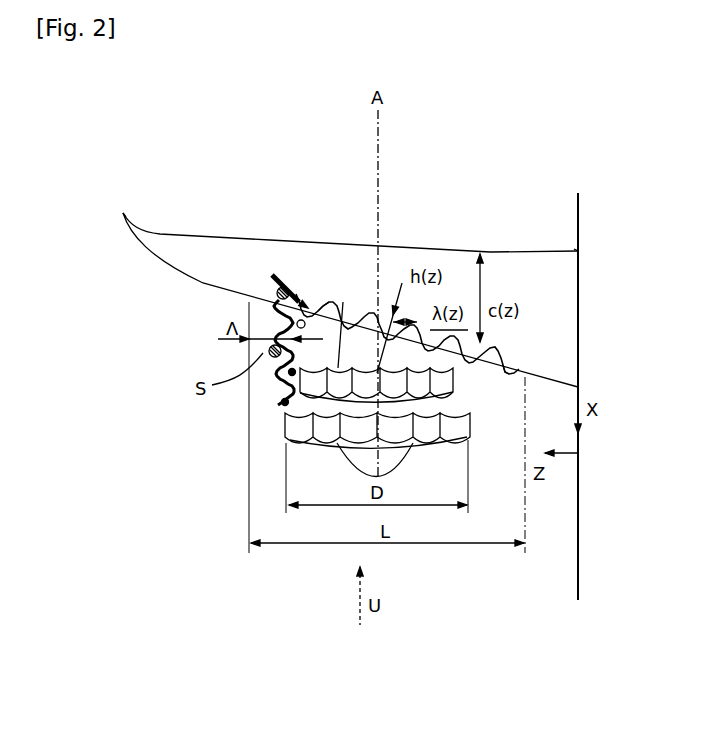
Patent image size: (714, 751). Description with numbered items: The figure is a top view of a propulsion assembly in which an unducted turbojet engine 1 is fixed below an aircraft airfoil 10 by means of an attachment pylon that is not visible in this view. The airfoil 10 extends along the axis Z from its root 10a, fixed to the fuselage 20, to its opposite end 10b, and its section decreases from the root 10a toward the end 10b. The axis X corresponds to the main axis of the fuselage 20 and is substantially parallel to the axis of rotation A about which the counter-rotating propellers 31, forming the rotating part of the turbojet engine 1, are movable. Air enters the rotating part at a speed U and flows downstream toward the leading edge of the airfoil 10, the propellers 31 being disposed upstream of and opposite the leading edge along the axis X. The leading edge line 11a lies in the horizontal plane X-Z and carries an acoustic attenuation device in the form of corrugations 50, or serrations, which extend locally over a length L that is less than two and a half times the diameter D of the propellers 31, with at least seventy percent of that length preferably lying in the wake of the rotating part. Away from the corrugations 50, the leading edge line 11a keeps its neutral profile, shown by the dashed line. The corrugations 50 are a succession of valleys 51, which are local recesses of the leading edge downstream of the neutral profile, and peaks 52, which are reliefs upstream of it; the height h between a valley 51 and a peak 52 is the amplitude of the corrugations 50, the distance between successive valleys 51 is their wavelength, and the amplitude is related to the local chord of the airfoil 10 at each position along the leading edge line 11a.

The unducted turbojet engine 1 is at (287, 567).
The aircraft airfoil 10 is at (235, 252).
The root 10a is at (578, 250).
The opposite end 10b is at (123, 213).
The leading edge line 11a is at (203, 283).
The fuselage 20 is at (565, 562).
The counter-rotating propellers 31 is at (295, 425).
The corrugations 50 is at (390, 275).
The valley 51 is at (322, 296).
The peak 52 is at (478, 377).